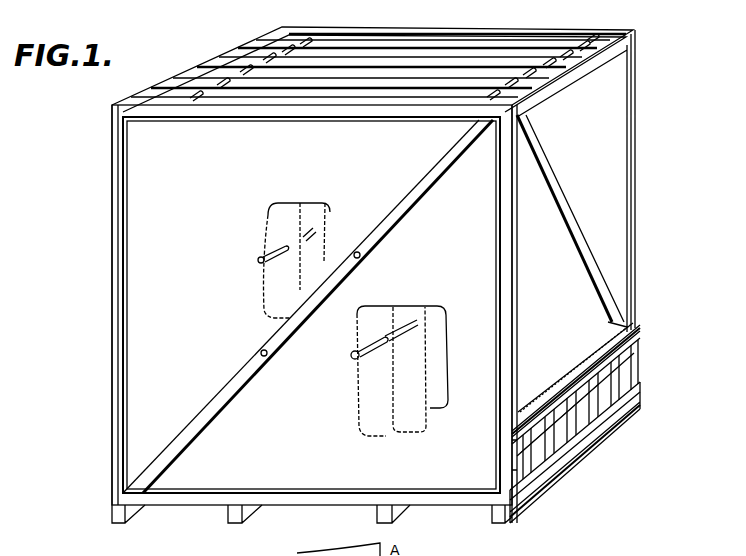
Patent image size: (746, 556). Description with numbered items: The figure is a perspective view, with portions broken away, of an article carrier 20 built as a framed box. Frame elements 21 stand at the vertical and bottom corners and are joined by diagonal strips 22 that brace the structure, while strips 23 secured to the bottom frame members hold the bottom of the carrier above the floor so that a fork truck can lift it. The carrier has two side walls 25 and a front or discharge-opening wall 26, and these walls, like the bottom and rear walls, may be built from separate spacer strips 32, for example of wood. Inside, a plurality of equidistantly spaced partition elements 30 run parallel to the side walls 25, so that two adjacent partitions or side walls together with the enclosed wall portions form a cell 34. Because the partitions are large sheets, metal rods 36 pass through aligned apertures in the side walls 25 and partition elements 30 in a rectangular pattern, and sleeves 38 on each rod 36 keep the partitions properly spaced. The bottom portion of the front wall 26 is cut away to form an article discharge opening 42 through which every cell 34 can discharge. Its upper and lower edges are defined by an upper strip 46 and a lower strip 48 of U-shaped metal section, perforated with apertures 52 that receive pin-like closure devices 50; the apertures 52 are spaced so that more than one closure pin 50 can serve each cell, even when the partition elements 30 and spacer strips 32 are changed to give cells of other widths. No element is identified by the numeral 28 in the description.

The carrier 20 is at (110, 276).
The frame elements 21 is at (112, 163).
The diagonal strips 22 is at (382, 238).
The strips 23 is at (120, 512).
The side walls 25 is at (150, 382).
The front wall 26 is at (605, 228).
The gate frame 28 is at (608, 420).
The partition elements 30 is at (367, 50).
The spacer strips 32 is at (572, 438).
The cell 34 is at (422, 53).
The metal rods 36 is at (260, 262).
The sleeves 38 is at (315, 228).
The article discharge opening 42 is at (607, 383).
The upper strip 46 is at (633, 329).
The lower strip 48 is at (520, 512).
The closure devices 50 is at (513, 458).
The apertures 52 is at (540, 412).